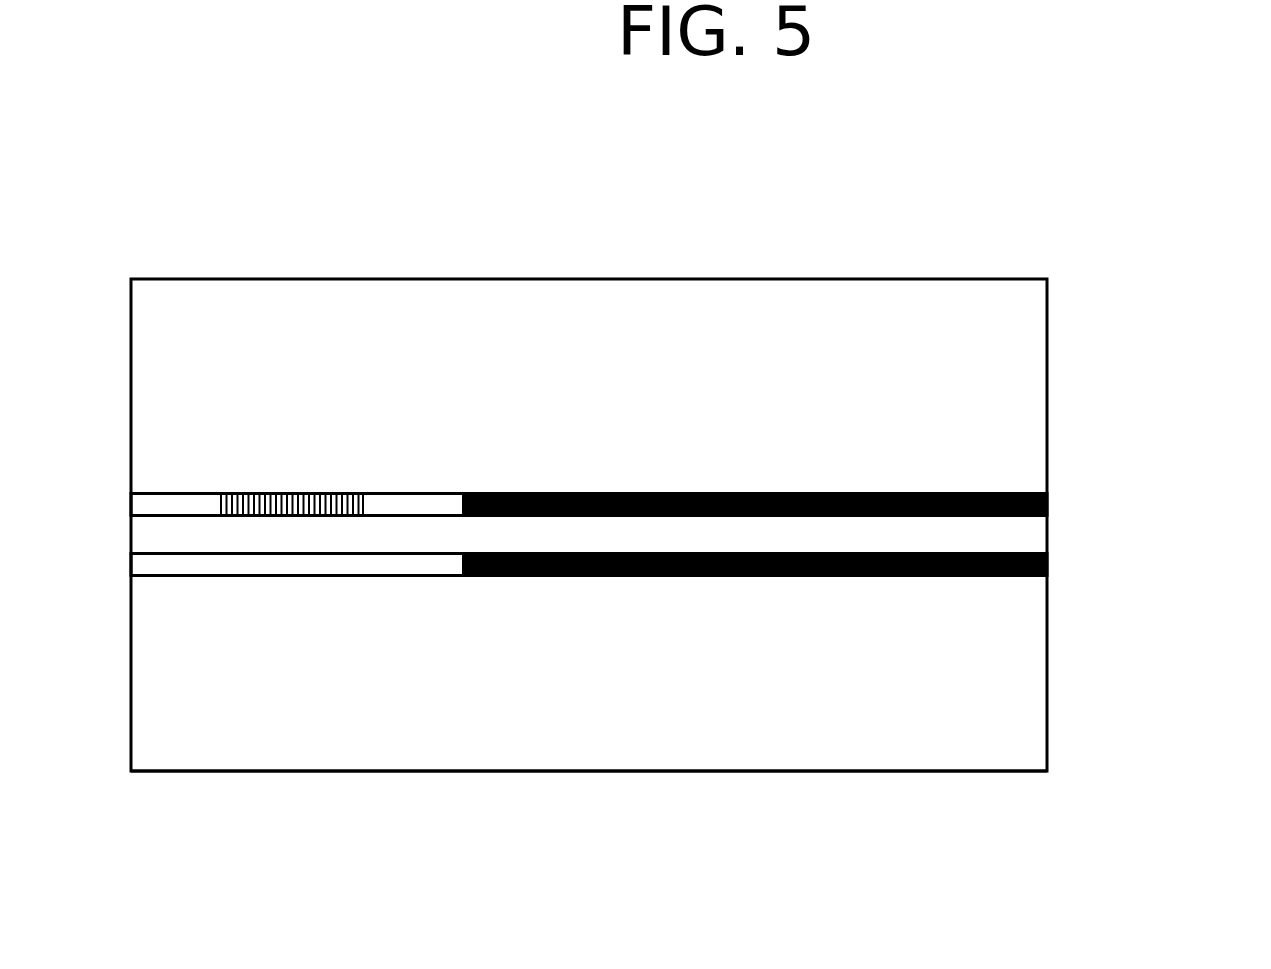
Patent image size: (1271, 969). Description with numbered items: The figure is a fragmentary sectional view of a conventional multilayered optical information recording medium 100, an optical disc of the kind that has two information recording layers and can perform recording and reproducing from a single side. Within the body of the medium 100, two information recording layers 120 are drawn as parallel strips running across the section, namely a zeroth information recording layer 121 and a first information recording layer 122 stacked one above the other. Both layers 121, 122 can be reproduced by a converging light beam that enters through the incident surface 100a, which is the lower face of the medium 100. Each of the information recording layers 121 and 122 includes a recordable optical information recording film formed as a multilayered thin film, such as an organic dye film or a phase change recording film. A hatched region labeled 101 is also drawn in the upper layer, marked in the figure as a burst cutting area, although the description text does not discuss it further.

The multilayered optical information recording medium 100 is at (858, 280).
The incident surface 100a is at (753, 772).
The burst cutting area (BCA) 101 is at (315, 492).
The information recording layers 120 is at (694, 580).
The 0-th information recording layer 121 is at (644, 543).
The first information recording layer 122 is at (1023, 492).